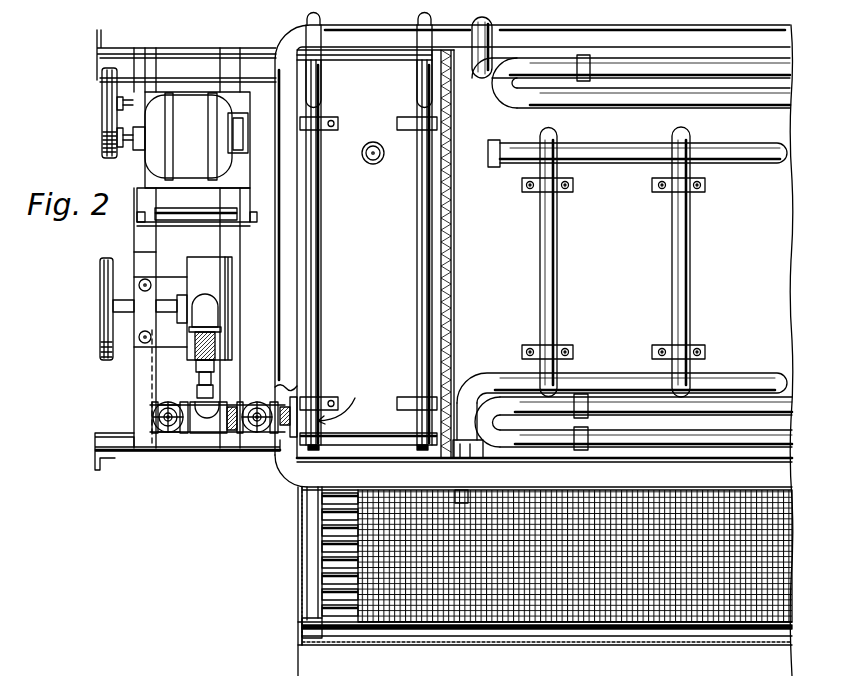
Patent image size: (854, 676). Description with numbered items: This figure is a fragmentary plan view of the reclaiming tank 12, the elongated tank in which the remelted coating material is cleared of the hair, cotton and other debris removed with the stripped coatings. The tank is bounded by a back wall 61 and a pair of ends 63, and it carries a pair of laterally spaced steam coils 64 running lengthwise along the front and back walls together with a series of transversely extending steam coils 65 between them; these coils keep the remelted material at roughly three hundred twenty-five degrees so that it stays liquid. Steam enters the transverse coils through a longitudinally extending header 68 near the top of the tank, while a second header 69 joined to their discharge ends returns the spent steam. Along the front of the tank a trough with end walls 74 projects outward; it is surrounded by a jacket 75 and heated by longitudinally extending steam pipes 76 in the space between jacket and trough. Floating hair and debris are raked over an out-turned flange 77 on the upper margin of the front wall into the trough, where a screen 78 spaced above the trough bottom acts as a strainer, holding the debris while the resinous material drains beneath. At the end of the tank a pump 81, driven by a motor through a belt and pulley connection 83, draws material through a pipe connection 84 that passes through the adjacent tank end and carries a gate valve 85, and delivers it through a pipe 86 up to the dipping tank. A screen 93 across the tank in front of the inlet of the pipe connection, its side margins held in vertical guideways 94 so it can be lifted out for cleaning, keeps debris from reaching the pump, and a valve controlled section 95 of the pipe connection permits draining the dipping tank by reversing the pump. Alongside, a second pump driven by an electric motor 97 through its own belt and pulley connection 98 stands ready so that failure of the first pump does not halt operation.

The reclaiming tank 12 is at (581, 18).
The back wall 61 is at (505, 47).
The ends 63 is at (300, 327).
The steam coils 64 is at (632, 100).
The steam coils 65 is at (552, 257).
The header 68 is at (733, 162).
The header 69 is at (722, 378).
The end walls 74 is at (302, 592).
The jacket 75 is at (432, 640).
The steam pipes 76 is at (347, 594).
The out-turned flange 77 is at (544, 472).
The screen 78 is at (510, 612).
The pump 81 is at (215, 281).
The belt and pulley connection 83 is at (94, 291).
The pipe connection 84 is at (236, 433).
The gate valve 85 is at (262, 437).
The pipe 86 is at (198, 342).
The screen 93 is at (451, 218).
The vertical guideways 94 is at (450, 458).
The valve controlled section 95 is at (168, 433).
The electric motor 97 is at (191, 140).
The belt and pulley connection 98 is at (102, 100).